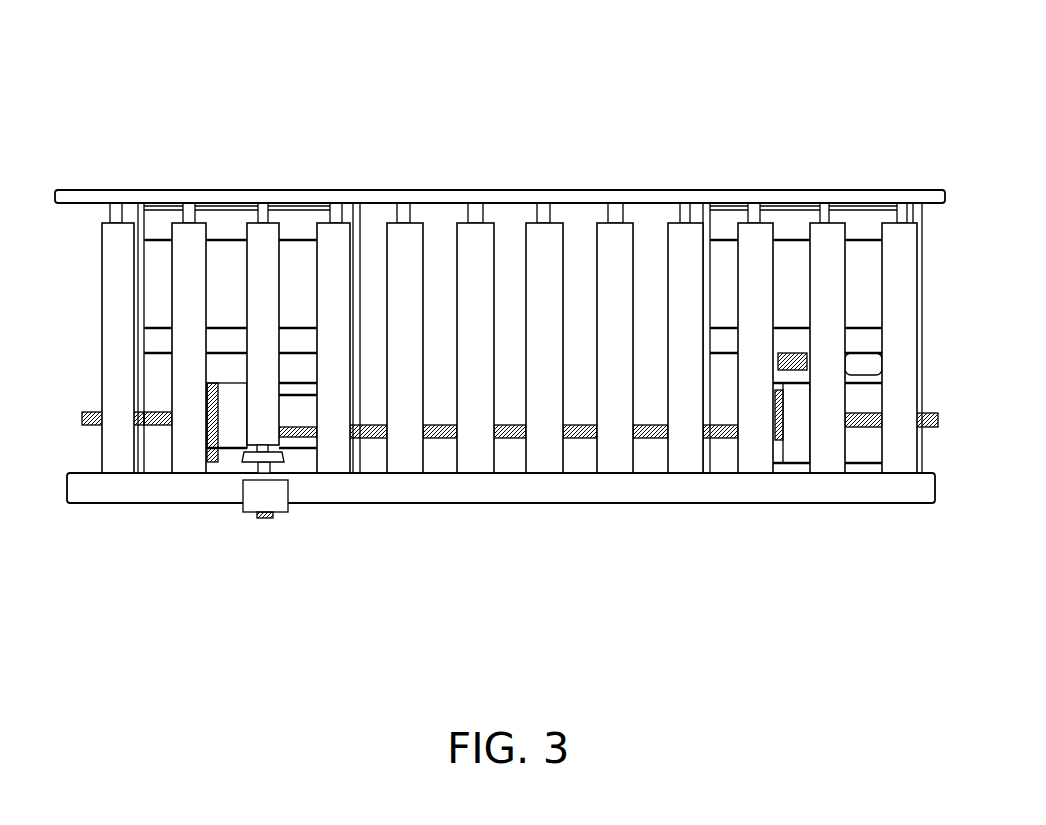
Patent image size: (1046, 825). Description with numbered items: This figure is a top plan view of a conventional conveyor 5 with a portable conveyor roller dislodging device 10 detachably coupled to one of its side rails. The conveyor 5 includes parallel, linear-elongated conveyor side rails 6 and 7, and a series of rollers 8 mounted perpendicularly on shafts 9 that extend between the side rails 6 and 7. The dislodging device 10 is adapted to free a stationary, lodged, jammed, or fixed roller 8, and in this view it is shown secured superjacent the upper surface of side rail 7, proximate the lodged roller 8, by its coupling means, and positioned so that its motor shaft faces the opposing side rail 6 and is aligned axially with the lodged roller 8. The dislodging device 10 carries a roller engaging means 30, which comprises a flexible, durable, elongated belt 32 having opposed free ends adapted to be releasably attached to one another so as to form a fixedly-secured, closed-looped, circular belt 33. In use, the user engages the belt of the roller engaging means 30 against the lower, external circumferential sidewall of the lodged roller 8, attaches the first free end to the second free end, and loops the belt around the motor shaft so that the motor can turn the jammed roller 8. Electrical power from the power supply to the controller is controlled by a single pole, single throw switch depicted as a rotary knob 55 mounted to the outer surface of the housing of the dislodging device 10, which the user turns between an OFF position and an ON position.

The conveyor 5 is at (131, 140).
The conveyor side rail 6 is at (651, 200).
The conveyor side rail 7 is at (613, 493).
The rollers 8 is at (540, 250).
The shafts 9 is at (328, 210).
The portable conveyor roller dislodging device 10 is at (288, 520).
The roller engaging means 30 is at (240, 460).
The elongated belt 32 is at (278, 460).
The closed-looped circular belt 33 is at (278, 460).
The rotary knob 55 is at (263, 519).